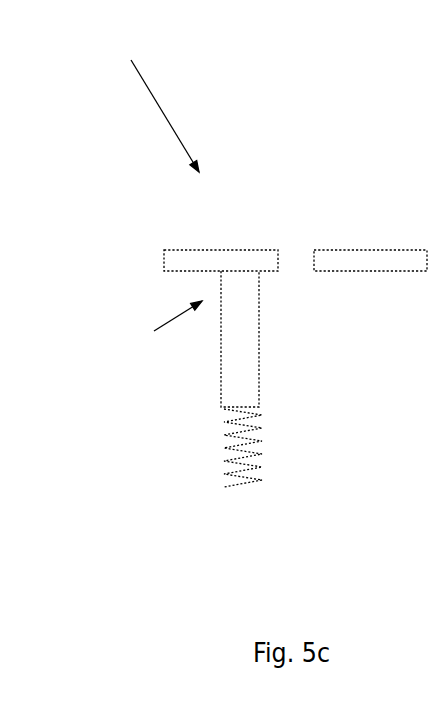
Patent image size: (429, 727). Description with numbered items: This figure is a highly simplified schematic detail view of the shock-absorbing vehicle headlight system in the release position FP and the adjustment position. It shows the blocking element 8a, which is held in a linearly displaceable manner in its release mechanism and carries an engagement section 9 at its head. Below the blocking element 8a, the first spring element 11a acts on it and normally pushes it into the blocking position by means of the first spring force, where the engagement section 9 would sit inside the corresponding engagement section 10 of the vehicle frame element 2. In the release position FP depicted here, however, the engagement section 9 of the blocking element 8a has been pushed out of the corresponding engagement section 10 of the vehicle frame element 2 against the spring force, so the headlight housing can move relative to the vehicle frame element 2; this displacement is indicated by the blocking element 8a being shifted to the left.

The vehicle frame element 2 is at (255, 260).
The corresponding engagement section 10 is at (294, 247).
The engagement section 9 is at (241, 288).
The blocking element 8a is at (160, 331).
The first spring element 11a is at (252, 457).
The release position FP is at (146, 97).